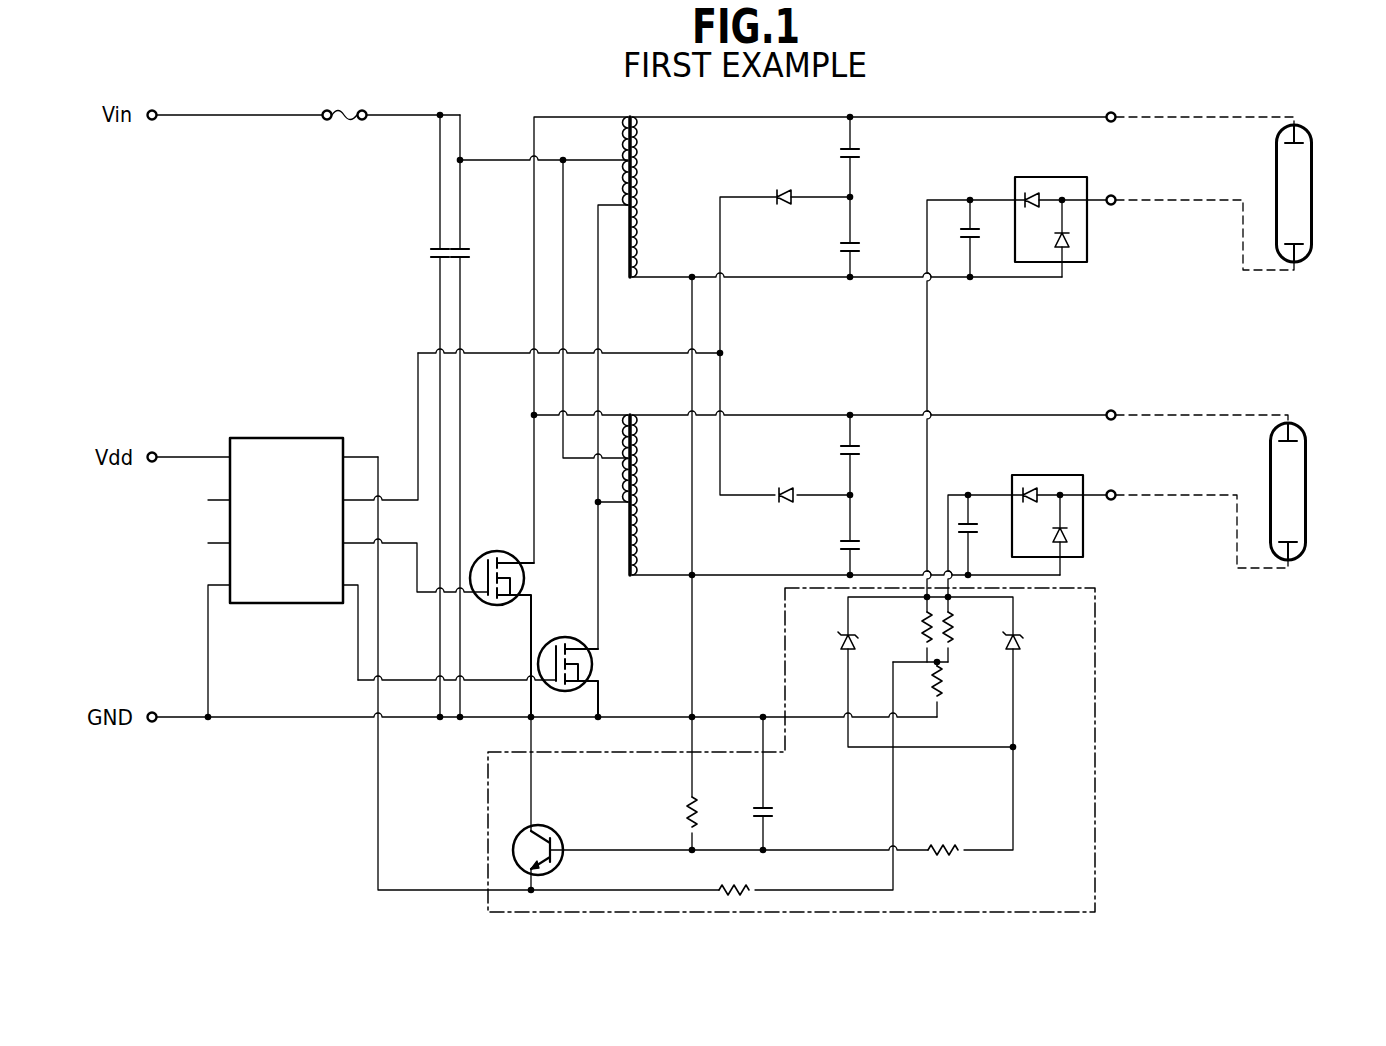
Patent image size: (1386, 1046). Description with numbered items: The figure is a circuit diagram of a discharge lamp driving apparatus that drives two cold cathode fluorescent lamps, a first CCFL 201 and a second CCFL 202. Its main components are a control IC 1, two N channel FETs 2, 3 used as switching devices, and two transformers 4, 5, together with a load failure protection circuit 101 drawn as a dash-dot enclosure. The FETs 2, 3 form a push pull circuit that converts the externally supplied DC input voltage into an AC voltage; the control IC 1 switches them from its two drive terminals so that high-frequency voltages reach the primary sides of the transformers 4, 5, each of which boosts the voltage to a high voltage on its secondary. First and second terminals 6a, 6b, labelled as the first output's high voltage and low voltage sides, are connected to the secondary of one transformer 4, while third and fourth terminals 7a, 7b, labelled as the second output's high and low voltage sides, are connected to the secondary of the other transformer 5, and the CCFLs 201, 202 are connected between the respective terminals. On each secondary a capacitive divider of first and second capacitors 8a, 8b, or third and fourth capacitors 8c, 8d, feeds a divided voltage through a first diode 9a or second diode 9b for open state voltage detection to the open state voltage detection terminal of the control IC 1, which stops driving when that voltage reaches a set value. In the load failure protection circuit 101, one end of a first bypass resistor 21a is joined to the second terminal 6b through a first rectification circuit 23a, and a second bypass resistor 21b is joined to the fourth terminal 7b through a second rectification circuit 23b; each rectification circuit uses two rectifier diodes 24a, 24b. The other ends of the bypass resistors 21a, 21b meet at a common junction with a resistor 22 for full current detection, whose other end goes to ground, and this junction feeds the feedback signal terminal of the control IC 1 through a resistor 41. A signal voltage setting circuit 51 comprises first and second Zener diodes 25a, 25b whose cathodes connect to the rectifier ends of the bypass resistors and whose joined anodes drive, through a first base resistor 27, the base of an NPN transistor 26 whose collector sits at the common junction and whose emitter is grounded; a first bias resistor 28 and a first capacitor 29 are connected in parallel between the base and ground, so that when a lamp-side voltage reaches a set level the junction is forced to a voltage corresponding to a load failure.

The control IC 1 is at (262, 605).
The N channel FET 2 is at (509, 554).
The N channel FET 3 is at (580, 630).
The transformer 4 is at (638, 117).
The transformer 5 is at (633, 415).
The first terminal 6a is at (1112, 122).
The second terminal 6b is at (1112, 205).
The third terminal 7a is at (1112, 420).
The fourth terminal 7b is at (1112, 500).
The first capacitor 8a is at (860, 147).
The second capacitor 8b is at (860, 253).
The third capacitor 8c is at (857, 444).
The fourth capacitor 8d is at (857, 537).
The first diode for open state voltage detection 9a is at (787, 190).
The second diode for open state voltage detection 9b is at (786, 487).
The first bypass resistor 21a is at (922, 622).
The second bypass resistor 21b is at (961, 612).
The resistor for full current detection 22 is at (941, 696).
The first rectification circuit 23a is at (1088, 243).
The second rectification circuit 23b is at (1012, 487).
The rectifier diode 24a is at (1033, 192).
The rectifier diode 24b is at (1070, 262).
The first Zener diode 25a is at (846, 654).
The second Zener diode 25b is at (1020, 654).
The NPN transistor 26 is at (574, 828).
The first base resistor 27 is at (948, 850).
The first bias resistor 28 is at (681, 827).
The first capacitor 29 is at (770, 804).
The resistor 41 is at (765, 873).
The signal voltage setting circuit 51 is at (832, 615).
The load failure protection circuit 101 is at (1095, 680).
The first CCFL 201 is at (1313, 186).
The second CCFL 202 is at (1307, 520).